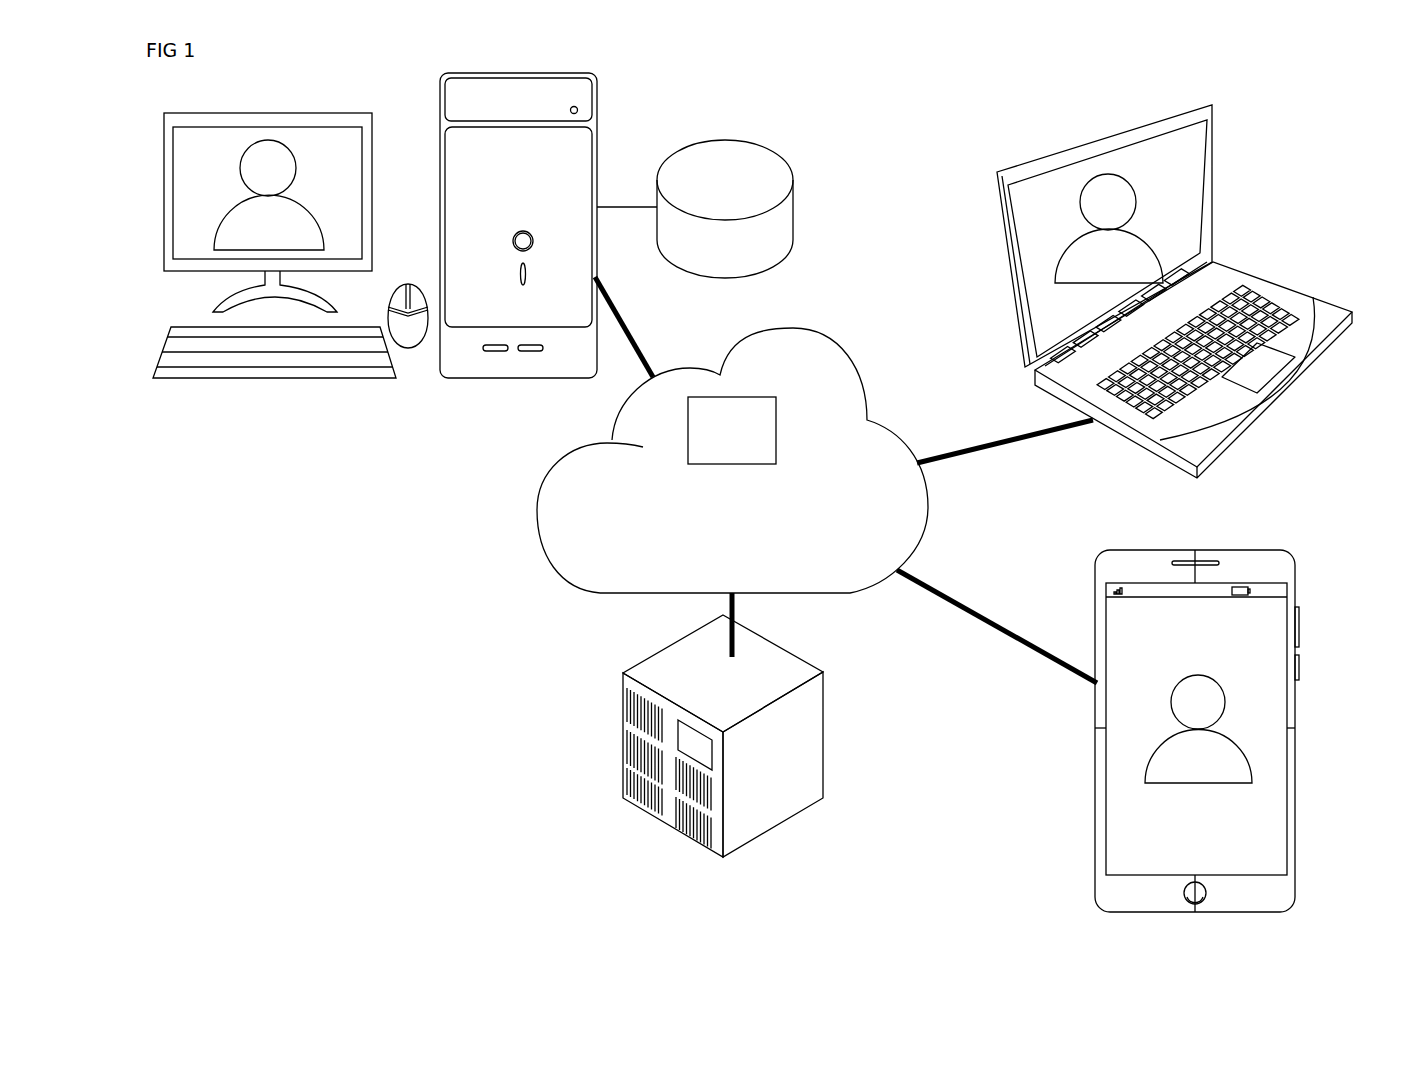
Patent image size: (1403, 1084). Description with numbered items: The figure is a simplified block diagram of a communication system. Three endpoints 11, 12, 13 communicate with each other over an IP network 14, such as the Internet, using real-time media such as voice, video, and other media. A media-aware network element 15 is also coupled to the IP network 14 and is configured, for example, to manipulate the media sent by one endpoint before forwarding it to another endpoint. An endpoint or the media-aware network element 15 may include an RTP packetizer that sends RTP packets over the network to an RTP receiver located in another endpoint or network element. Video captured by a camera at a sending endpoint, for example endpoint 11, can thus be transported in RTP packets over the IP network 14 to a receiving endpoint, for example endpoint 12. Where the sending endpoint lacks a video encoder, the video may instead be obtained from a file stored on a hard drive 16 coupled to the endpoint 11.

The endpoint 11 is at (597, 128).
The endpoint 12 is at (1240, 265).
The endpoint 13 is at (1093, 865).
The IP network 14 is at (732, 460).
The media-aware network element 15 is at (623, 762).
The hard drive 16 is at (790, 185).